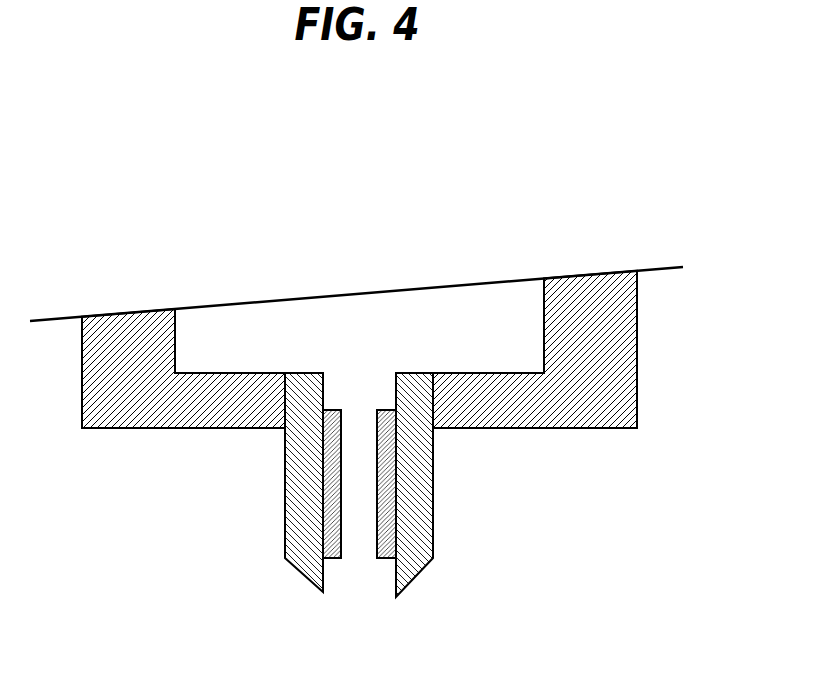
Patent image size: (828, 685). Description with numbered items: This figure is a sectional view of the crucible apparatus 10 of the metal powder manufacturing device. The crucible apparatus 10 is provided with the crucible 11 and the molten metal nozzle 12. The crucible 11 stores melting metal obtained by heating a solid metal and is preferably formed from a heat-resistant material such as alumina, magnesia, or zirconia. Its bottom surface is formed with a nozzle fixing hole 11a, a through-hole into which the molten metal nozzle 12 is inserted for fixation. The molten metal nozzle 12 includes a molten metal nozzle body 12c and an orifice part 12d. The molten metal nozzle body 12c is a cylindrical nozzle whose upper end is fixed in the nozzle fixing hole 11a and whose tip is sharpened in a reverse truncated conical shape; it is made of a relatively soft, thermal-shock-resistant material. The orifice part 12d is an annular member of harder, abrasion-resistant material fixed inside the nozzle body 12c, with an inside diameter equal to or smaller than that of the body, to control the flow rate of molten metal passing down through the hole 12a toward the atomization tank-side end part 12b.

The crucible apparatus 10 is at (205, 278).
The crucible 11 is at (602, 367).
The nozzle fixing hole 11a is at (433, 410).
The molten metal nozzle 12 is at (357, 503).
The hole 12a is at (362, 492).
The atomization tank-side end part 12b is at (306, 576).
The molten metal nozzle body 12c is at (427, 460).
The orifice part 12d is at (383, 552).